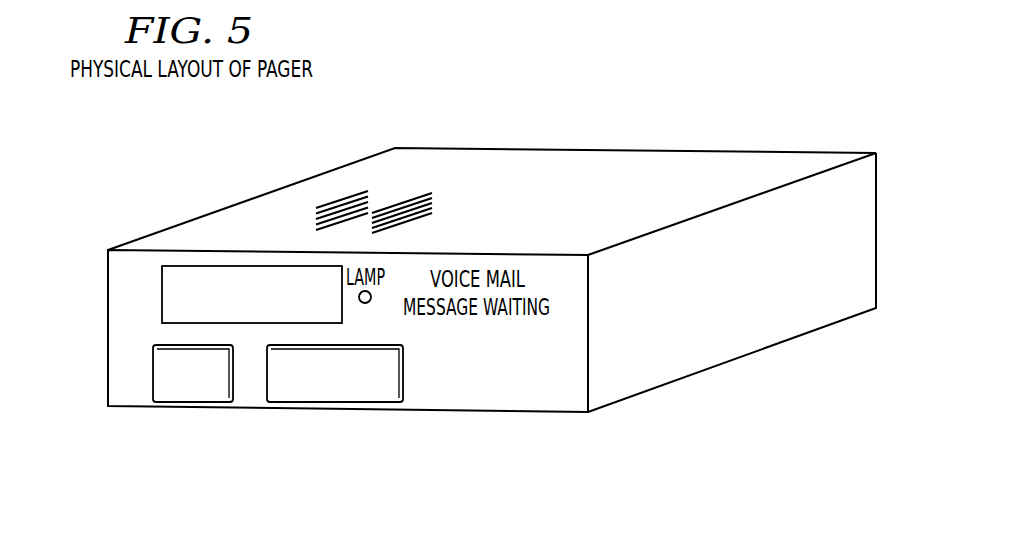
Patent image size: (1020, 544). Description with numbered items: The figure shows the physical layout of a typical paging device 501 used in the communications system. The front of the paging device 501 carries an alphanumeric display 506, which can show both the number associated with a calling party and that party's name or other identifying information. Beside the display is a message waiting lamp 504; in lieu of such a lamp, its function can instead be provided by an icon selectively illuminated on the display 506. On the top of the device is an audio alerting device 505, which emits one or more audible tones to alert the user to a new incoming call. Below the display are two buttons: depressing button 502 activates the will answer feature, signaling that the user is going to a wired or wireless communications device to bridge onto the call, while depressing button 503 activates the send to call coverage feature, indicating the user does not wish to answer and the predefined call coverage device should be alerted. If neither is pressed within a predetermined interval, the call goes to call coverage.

The paging device 501 is at (697, 366).
The will answer button 502 is at (175, 402).
The send to call coverage button 503 is at (287, 402).
The message waiting lamp 504 is at (390, 263).
The audio alerting device 505 is at (393, 187).
The alphanumeric display 506 is at (167, 300).